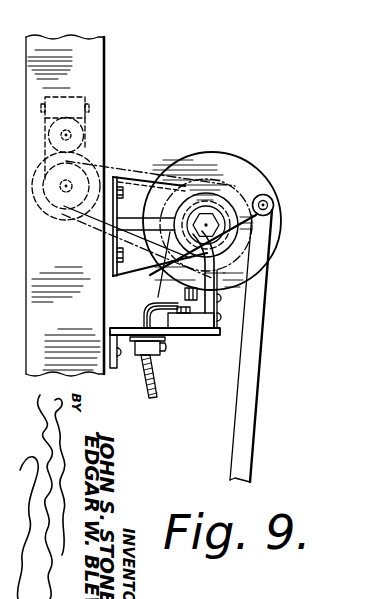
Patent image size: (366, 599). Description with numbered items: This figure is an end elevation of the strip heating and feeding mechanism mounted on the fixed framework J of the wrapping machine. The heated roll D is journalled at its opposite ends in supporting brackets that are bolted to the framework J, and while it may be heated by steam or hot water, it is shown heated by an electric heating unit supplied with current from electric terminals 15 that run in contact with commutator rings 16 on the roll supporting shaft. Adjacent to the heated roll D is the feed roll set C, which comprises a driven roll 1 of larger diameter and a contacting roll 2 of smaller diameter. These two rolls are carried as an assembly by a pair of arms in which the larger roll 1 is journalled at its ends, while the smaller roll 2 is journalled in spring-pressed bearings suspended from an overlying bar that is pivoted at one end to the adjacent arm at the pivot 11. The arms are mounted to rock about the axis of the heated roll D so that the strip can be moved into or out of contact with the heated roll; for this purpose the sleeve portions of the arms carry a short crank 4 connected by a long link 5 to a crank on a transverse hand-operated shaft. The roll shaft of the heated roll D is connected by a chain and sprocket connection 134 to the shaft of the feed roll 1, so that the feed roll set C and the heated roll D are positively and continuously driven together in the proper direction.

The fixed framework J is at (104, 62).
The pivot 11 is at (88, 112).
The feed roll set C is at (88, 115).
The contacting roll 2 is at (85, 137).
The driven roll 1 is at (63, 218).
The chain and sprocket connection 134 is at (135, 171).
The heated roll D is at (215, 148).
The short crank 4 is at (254, 196).
The commutator rings 16 is at (234, 232).
The electric terminals 15 is at (248, 274).
The long link 5 is at (255, 332).